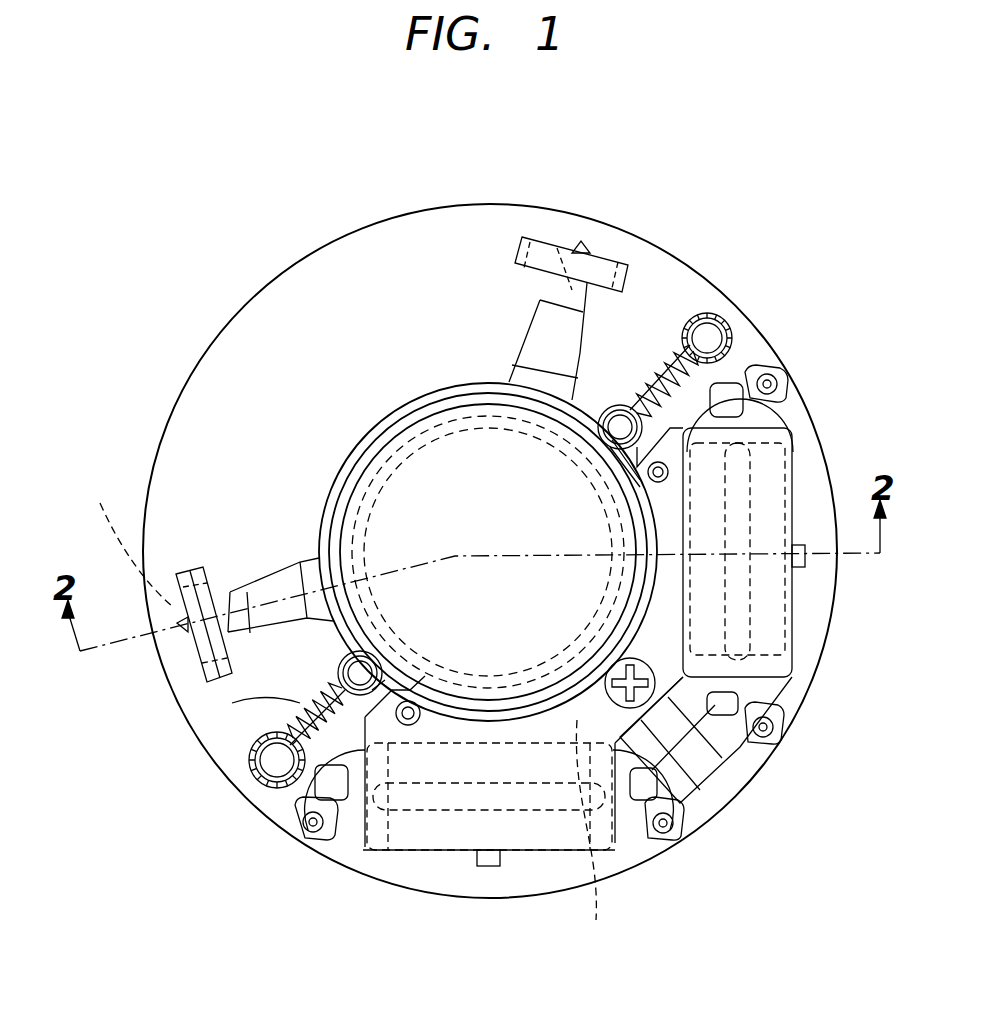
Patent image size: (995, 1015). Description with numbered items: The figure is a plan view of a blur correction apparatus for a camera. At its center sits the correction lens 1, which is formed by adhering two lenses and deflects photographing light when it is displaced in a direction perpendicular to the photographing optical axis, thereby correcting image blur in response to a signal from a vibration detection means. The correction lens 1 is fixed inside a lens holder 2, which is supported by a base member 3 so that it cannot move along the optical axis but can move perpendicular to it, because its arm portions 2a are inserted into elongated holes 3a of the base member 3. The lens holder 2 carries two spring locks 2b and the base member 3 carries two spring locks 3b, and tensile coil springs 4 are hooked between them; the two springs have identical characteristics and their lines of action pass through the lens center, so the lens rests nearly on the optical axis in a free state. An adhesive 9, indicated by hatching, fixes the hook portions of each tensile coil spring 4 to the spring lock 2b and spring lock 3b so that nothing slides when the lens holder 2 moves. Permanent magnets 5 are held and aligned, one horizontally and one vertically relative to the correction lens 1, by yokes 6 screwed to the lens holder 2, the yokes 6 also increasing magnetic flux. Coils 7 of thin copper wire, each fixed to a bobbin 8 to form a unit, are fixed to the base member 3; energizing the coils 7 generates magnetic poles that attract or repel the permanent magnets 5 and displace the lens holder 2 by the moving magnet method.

The correction lens 1 is at (400, 512).
The lens holder 2 is at (417, 408).
The arm portions 2a is at (558, 297).
The spring lock 2b is at (617, 413).
The base member 3 is at (192, 392).
The elongated holes 3a is at (120, 547).
The spring lock 3b is at (725, 318).
The tensile coil springs 4 is at (653, 360).
The permanent magnets 5 is at (748, 495).
The yokes 6 is at (588, 835).
The coils 7 is at (350, 823).
The bobbin 8 is at (783, 407).
The adhesive 9 is at (617, 413).